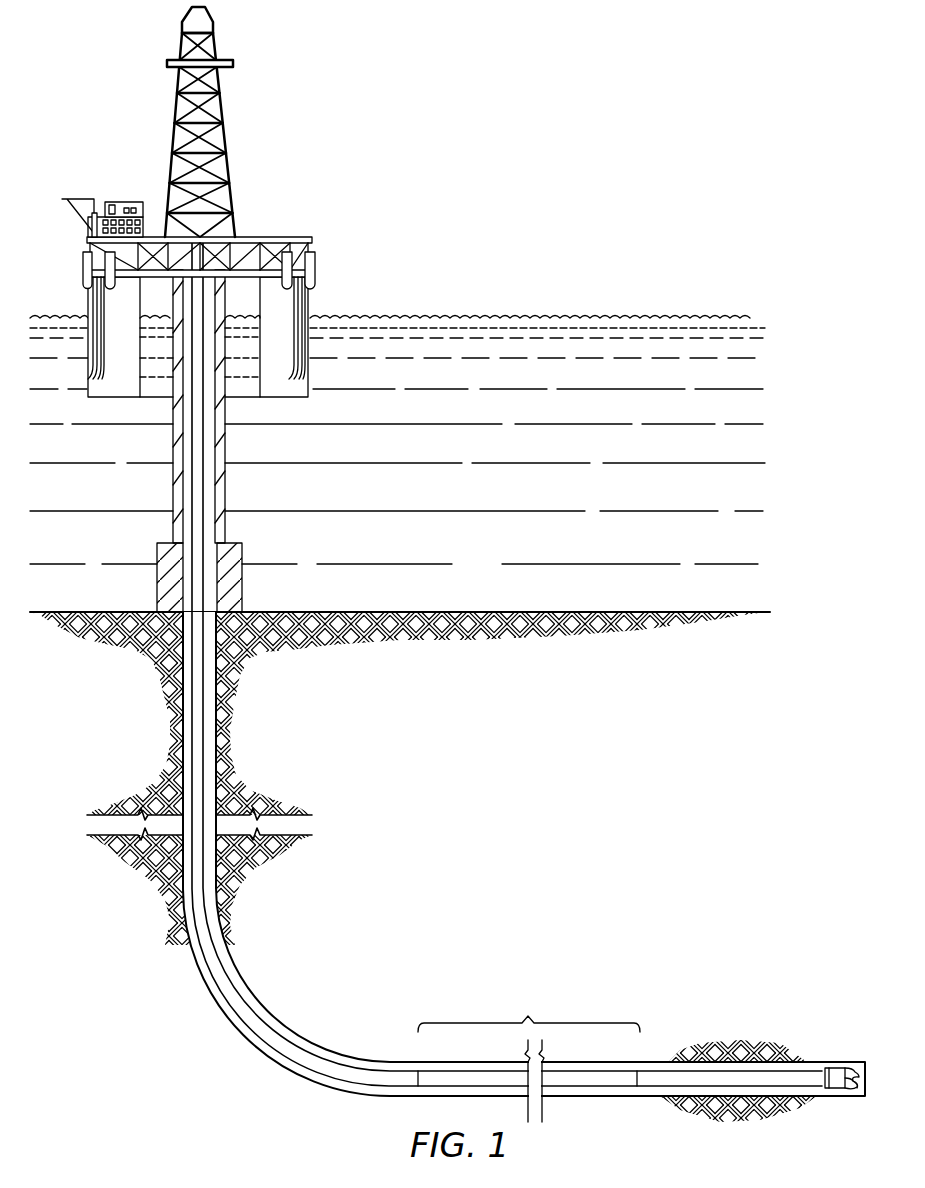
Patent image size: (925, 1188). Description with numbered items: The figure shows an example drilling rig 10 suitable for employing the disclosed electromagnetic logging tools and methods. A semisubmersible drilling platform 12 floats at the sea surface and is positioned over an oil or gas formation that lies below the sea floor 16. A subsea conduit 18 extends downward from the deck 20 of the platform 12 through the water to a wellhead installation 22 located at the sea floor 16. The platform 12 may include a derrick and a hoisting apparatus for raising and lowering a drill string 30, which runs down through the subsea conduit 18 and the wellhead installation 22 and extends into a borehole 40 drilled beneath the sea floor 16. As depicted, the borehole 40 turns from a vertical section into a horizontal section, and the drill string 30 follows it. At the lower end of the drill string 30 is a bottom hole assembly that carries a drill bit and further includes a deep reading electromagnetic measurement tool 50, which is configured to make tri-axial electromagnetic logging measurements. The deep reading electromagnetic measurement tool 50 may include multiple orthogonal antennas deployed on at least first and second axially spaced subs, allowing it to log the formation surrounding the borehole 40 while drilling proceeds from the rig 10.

The drilling rig 10 is at (318, 118).
The semisubmersible drilling platform 12 is at (296, 237).
The sea floor 16 is at (455, 612).
The subsea conduit 18 is at (226, 487).
The deck 20 is at (313, 273).
The wellhead installation 22 is at (242, 543).
The drill string 30 is at (200, 414).
The borehole 40 is at (187, 715).
The deep reading electromagnetic measurement tool 50 is at (529, 1055).